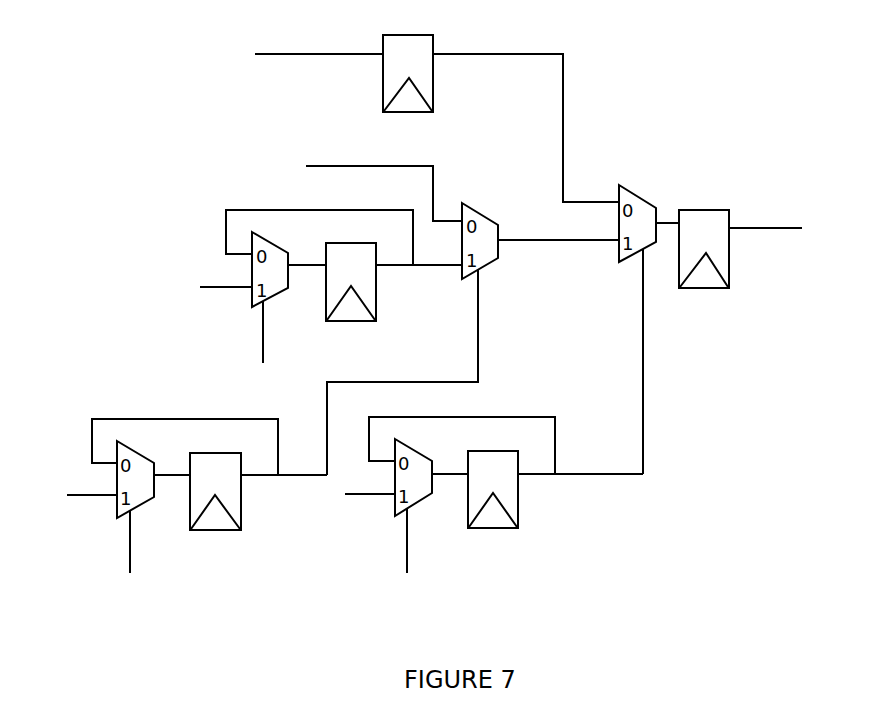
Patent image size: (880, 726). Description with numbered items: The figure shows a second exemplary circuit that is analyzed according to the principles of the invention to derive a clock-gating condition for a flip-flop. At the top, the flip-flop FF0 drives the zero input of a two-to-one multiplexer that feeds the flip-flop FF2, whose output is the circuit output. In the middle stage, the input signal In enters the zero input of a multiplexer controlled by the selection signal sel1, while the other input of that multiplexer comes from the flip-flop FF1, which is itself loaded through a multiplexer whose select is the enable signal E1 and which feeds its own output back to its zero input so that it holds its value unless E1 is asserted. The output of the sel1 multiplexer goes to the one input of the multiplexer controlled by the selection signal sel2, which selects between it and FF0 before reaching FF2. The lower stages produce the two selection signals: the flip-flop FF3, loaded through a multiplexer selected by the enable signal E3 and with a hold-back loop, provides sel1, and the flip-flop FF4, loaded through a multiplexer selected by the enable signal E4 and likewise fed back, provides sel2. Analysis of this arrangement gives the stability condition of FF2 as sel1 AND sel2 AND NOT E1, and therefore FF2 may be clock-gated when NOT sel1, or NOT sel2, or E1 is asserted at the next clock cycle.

The flip-flop FF0 is at (408, 86).
The flip-flop FF1 is at (351, 271).
The flip-flop FF2 is at (704, 237).
The flip-flop FF3 is at (215, 479).
The flip-flop FF4 is at (493, 478).
The input signal In is at (372, 187).
The enable signal E1 is at (261, 345).
The enable signal E3 is at (127, 555).
The enable signal E4 is at (405, 553).
The selection signal sel1 is at (402, 372).
The selection signal sel2 is at (615, 361).